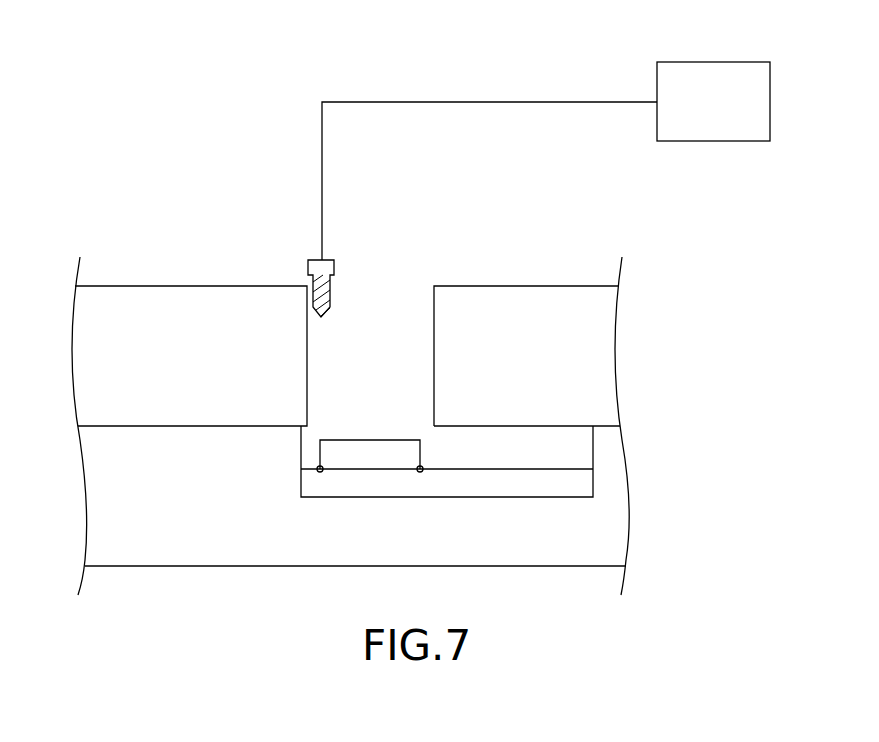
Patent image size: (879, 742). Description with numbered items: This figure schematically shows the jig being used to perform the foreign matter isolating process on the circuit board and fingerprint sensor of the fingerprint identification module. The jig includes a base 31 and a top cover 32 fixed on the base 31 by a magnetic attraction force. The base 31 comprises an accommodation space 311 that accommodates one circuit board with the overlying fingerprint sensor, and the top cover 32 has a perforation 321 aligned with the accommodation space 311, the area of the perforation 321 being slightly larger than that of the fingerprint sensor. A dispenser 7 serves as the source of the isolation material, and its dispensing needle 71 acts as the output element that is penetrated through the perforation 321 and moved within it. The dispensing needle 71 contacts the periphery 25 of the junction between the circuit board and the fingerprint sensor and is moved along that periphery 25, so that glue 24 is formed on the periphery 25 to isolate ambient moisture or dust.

The dispenser 7 is at (712, 75).
The dispensing needle 71 is at (323, 263).
The glue 24 is at (331, 297).
The perforation 321 is at (388, 293).
The top cover 32 is at (528, 302).
The accommodation space 311 is at (495, 442).
The periphery 25 is at (318, 472).
The base 31 is at (190, 548).